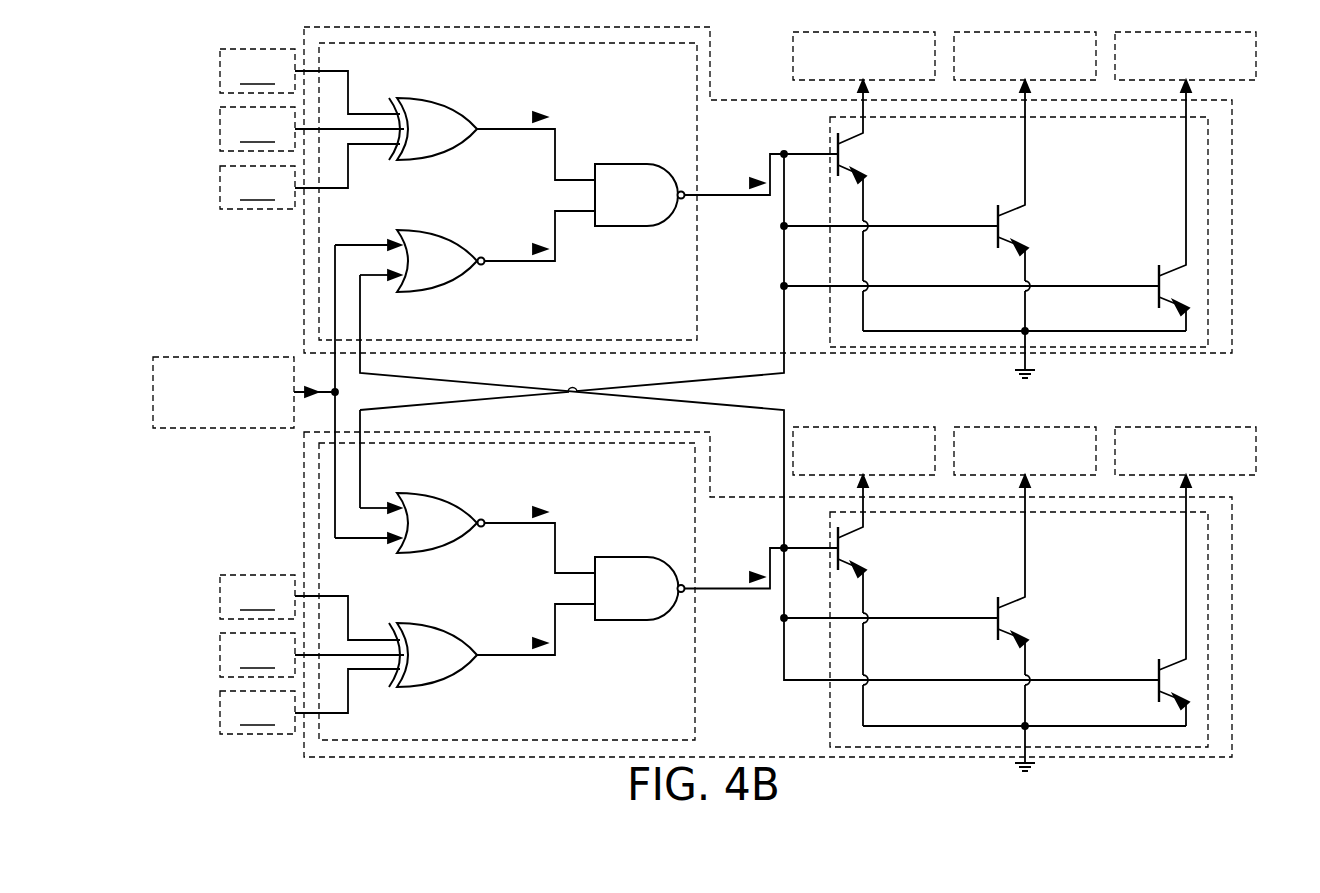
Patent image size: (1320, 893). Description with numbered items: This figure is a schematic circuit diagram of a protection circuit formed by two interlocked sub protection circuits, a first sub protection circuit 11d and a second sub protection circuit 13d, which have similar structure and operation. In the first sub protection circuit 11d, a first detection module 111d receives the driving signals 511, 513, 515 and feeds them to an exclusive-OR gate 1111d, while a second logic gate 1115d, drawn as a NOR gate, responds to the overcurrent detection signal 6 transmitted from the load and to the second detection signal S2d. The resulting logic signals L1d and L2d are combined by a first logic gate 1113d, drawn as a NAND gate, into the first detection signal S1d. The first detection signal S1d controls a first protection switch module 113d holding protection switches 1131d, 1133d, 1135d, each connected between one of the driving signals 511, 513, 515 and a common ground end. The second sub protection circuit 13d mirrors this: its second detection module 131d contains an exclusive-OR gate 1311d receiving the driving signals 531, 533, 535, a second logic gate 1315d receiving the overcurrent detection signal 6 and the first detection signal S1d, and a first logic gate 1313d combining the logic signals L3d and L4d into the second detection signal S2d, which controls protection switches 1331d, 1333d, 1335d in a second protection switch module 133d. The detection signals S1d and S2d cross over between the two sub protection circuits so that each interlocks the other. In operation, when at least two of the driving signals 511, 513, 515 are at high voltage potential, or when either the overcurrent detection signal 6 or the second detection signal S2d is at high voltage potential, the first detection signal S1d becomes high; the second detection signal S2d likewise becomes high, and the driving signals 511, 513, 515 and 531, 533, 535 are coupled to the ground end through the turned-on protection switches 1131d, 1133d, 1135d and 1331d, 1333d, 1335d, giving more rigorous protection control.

The overcurrent detection signal 6 is at (153, 392).
The first sub protection circuit 11d is at (304, 253).
The first logic circuit 111d is at (319, 278).
The first switch circuit 113d is at (1208, 169).
The second driving control unit 13d is at (304, 462).
The second logic circuit 131d is at (319, 494).
The second switch circuit 133d is at (1208, 564).
The driving signal 511 is at (813, 32).
The driving signal 513 is at (973, 32).
The driving signal 515 is at (1135, 32).
The driving signal 531 is at (577, 511).
The driving signal 533 is at (973, 427).
The driving signal 535 is at (1135, 427).
The XOR gate 1111d is at (440, 99).
The first logic gate 1113d is at (618, 227).
The second logic gate 1115d is at (424, 230).
The protection switch 1131d is at (896, 172).
The protection switch 1133d is at (1027, 226).
The protection switch 1135d is at (1187, 288).
The XOR gate 1311d is at (430, 684).
The first logic gate 1313d is at (618, 621).
The second logic gate 1315d is at (423, 555).
The protection switch 1331d is at (896, 566).
The protection switch 1333d is at (1027, 618).
The protection switch 1335d is at (1187, 681).
The first logic signal L1d is at (522, 117).
The second logic signal L2d is at (522, 249).
The first logic signal L3d is at (522, 643).
The fourth logic signal L4d is at (522, 512).
The first detection signal S1d is at (742, 185).
The second detection signal S2d is at (742, 578).